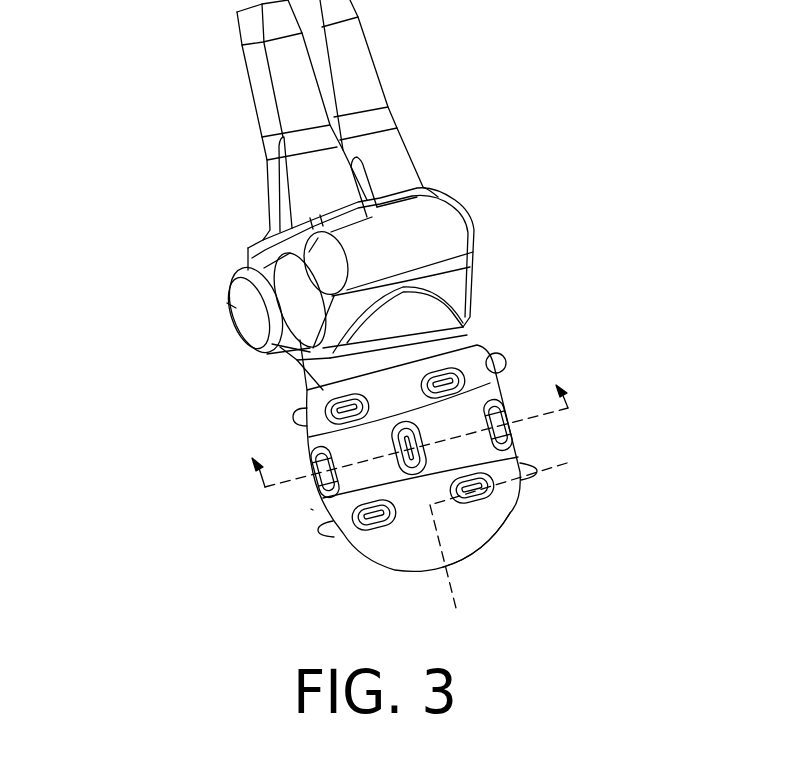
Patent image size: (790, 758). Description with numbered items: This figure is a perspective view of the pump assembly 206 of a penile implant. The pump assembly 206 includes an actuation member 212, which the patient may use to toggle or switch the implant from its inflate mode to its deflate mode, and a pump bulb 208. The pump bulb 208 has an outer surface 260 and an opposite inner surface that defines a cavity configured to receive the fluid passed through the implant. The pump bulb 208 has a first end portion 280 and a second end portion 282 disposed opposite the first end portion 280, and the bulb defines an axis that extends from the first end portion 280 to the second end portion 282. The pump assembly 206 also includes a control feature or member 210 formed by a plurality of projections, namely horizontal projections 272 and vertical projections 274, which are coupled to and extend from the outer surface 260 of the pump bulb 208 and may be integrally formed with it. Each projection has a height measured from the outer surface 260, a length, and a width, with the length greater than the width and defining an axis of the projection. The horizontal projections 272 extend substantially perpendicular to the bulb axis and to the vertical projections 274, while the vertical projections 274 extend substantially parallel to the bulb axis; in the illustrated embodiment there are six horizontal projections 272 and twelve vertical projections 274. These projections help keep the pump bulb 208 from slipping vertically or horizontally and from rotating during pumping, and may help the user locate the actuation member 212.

The pump assembly 206 is at (166, 355).
The pump bulb 208 is at (365, 547).
The control feature or member 210 is at (292, 412).
The actuation member 212 is at (237, 305).
The outer surface 260 is at (312, 497).
The horizontal projections 272 is at (506, 363).
The vertical projections 274 is at (515, 440).
The first end portion 280 is at (440, 262).
The second end portion 282 is at (500, 528).